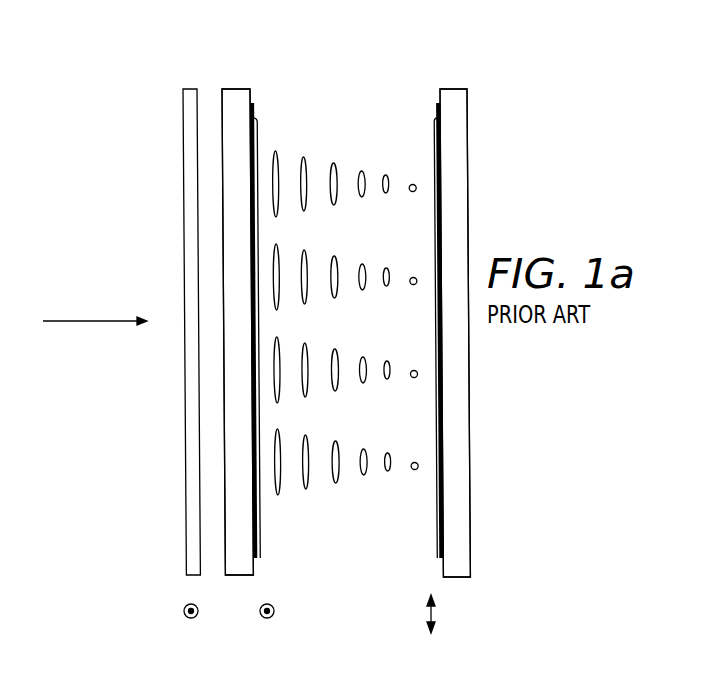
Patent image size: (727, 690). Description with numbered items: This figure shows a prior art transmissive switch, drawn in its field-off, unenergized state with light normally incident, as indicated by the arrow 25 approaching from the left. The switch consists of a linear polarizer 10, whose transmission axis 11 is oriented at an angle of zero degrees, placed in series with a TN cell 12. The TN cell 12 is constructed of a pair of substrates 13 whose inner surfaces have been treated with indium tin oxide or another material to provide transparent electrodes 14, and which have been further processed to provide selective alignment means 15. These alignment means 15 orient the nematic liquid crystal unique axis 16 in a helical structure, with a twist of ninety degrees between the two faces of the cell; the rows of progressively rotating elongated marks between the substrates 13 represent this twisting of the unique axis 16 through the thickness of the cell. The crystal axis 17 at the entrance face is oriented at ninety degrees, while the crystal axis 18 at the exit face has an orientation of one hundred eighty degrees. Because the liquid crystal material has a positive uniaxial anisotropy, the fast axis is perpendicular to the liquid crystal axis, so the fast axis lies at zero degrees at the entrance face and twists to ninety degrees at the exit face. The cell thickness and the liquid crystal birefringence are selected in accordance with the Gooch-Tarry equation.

The linear polarizer 10 is at (191, 88).
The transmission axis 11 is at (198, 614).
The TN cell 12 is at (457, 51).
The substrates 13 is at (439, 97).
The transparent electrodes 14 is at (258, 571).
The selective alignment means 15 is at (262, 549).
The nematic liquid crystal unique axis 16 is at (418, 139).
The crystal axis at the entrance face 17 is at (274, 614).
The crystal axis at the exit face 18 is at (434, 616).
The incident light direction 25 is at (110, 322).